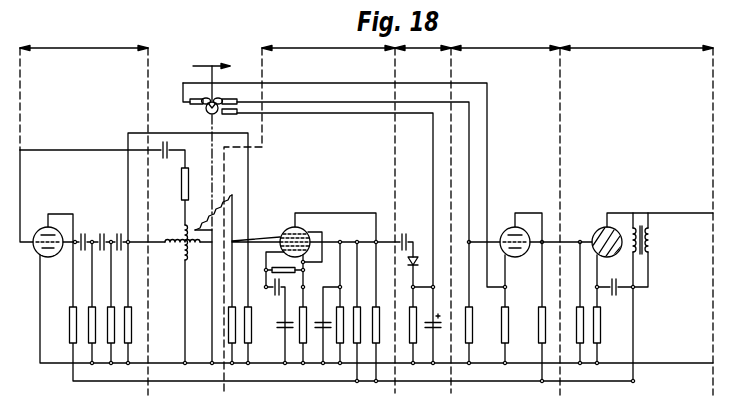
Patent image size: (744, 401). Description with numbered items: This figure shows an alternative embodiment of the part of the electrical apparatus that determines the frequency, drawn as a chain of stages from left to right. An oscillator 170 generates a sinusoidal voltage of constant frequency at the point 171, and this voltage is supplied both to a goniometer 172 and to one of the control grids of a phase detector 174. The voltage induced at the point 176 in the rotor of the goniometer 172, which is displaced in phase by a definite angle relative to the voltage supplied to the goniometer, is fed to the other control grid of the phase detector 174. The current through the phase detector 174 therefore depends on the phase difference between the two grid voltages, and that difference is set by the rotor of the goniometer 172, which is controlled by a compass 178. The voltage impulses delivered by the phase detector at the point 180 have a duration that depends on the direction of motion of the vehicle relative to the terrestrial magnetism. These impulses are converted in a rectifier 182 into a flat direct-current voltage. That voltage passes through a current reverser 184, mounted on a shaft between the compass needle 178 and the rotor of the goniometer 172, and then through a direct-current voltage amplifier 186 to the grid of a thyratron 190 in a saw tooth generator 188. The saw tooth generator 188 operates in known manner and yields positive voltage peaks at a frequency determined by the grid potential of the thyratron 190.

The oscillator 170 is at (67, 51).
The point 171 is at (128, 238).
The goniometer 172 is at (183, 265).
The phase detector 174 is at (300, 51).
The point 176 is at (241, 237).
The compass 178 is at (194, 65).
The point 180 is at (374, 240).
The rectifier 182 is at (429, 51).
The current reverser 184 is at (202, 110).
The D. C. voltage amplifier 186 is at (485, 51).
The saw tooth generator 188 is at (611, 51).
The thyratron 190 is at (597, 227).